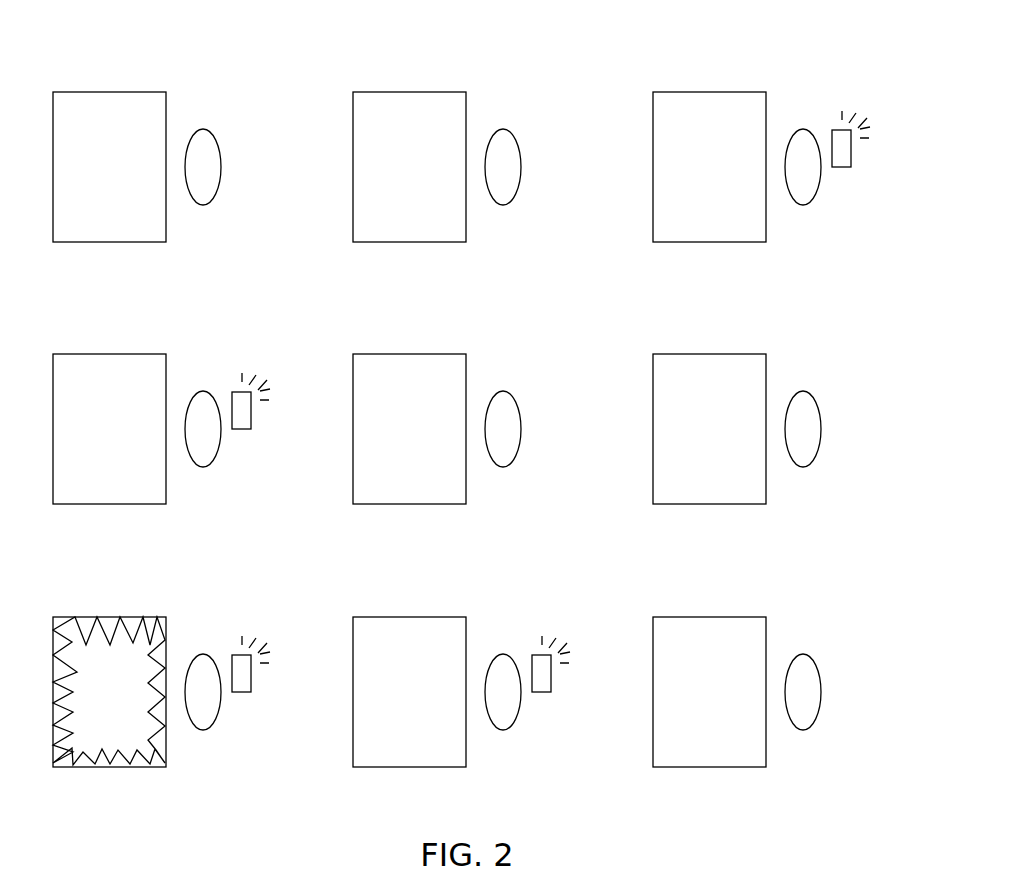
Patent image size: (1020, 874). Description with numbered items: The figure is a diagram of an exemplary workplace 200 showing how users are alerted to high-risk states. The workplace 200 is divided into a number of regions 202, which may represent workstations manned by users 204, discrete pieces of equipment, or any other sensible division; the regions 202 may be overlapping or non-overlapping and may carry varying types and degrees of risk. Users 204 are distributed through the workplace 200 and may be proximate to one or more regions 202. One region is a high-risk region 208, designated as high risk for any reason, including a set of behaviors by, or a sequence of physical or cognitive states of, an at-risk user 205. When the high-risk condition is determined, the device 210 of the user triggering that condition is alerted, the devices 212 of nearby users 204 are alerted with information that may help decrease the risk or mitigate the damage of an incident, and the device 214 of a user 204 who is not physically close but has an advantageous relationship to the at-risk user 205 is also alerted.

The workplace 200 is at (632, 27).
The regions 202 is at (731, 704).
The users 204 is at (203, 129).
The at-risk user 205 is at (203, 654).
The high-risk region 208 is at (89, 704).
The device 210 is at (242, 692).
The devices 212 is at (242, 429).
The device 214 is at (842, 167).